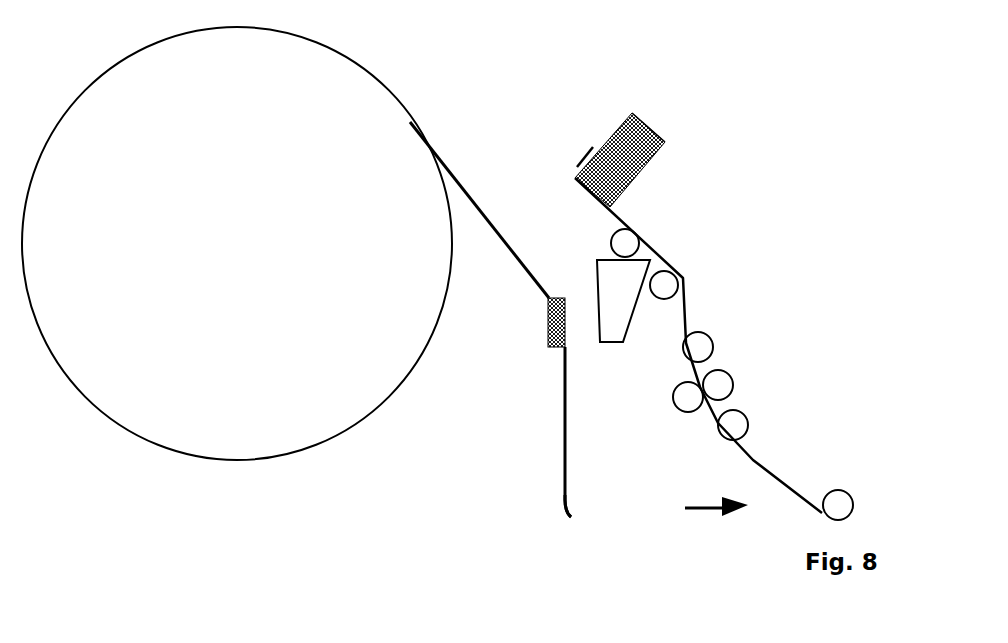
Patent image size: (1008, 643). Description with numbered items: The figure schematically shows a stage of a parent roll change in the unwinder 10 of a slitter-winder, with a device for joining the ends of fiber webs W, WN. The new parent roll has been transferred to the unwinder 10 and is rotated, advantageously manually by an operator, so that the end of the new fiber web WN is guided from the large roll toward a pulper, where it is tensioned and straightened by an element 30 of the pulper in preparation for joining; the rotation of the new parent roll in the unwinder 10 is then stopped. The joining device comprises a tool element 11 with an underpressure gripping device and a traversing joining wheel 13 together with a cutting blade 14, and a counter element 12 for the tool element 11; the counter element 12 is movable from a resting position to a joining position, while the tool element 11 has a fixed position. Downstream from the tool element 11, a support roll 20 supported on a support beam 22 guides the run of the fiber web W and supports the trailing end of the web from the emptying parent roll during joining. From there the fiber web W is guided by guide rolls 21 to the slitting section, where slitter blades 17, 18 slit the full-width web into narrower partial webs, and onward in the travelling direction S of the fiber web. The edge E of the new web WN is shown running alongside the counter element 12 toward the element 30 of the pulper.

The unwinder 10 is at (233, 395).
The tool element 11 is at (665, 140).
The counter element 12 is at (548, 347).
The joining wheel 13 is at (620, 106).
The cutting blade 14 is at (573, 162).
The slitter blade 17 is at (685, 394).
The slitter blade 18 is at (727, 379).
The support roll 20 is at (626, 229).
The guide roll 21 is at (670, 266).
The support beam 22 is at (610, 305).
The element of pulper 30 is at (560, 495).
The fiber web W is at (698, 317).
The new fiber web WN is at (516, 250).
The edge E is at (563, 443).
The travelling direction of the fiber web S is at (744, 516).